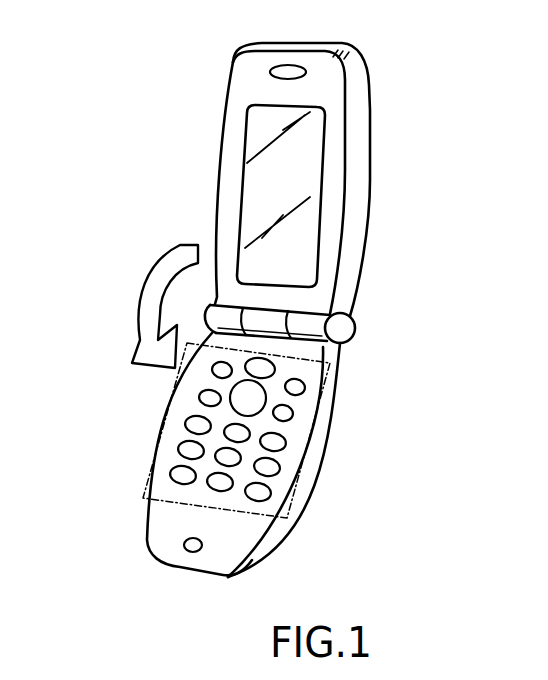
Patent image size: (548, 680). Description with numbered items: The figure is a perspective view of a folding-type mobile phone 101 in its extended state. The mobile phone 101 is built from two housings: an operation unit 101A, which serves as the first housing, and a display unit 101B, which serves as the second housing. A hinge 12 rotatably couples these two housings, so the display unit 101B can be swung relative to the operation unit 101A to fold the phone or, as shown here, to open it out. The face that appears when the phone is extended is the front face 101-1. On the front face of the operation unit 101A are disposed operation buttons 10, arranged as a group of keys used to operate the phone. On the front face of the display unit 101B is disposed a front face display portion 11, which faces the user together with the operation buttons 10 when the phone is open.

The mobile phone 101 is at (390, 60).
The front face 101-1 is at (106, 148).
The display unit 101B is at (369, 208).
The front face display portion 11 is at (317, 123).
The hinge 12 is at (346, 323).
The operation unit 101A is at (336, 405).
The operation buttons 10 is at (291, 503).